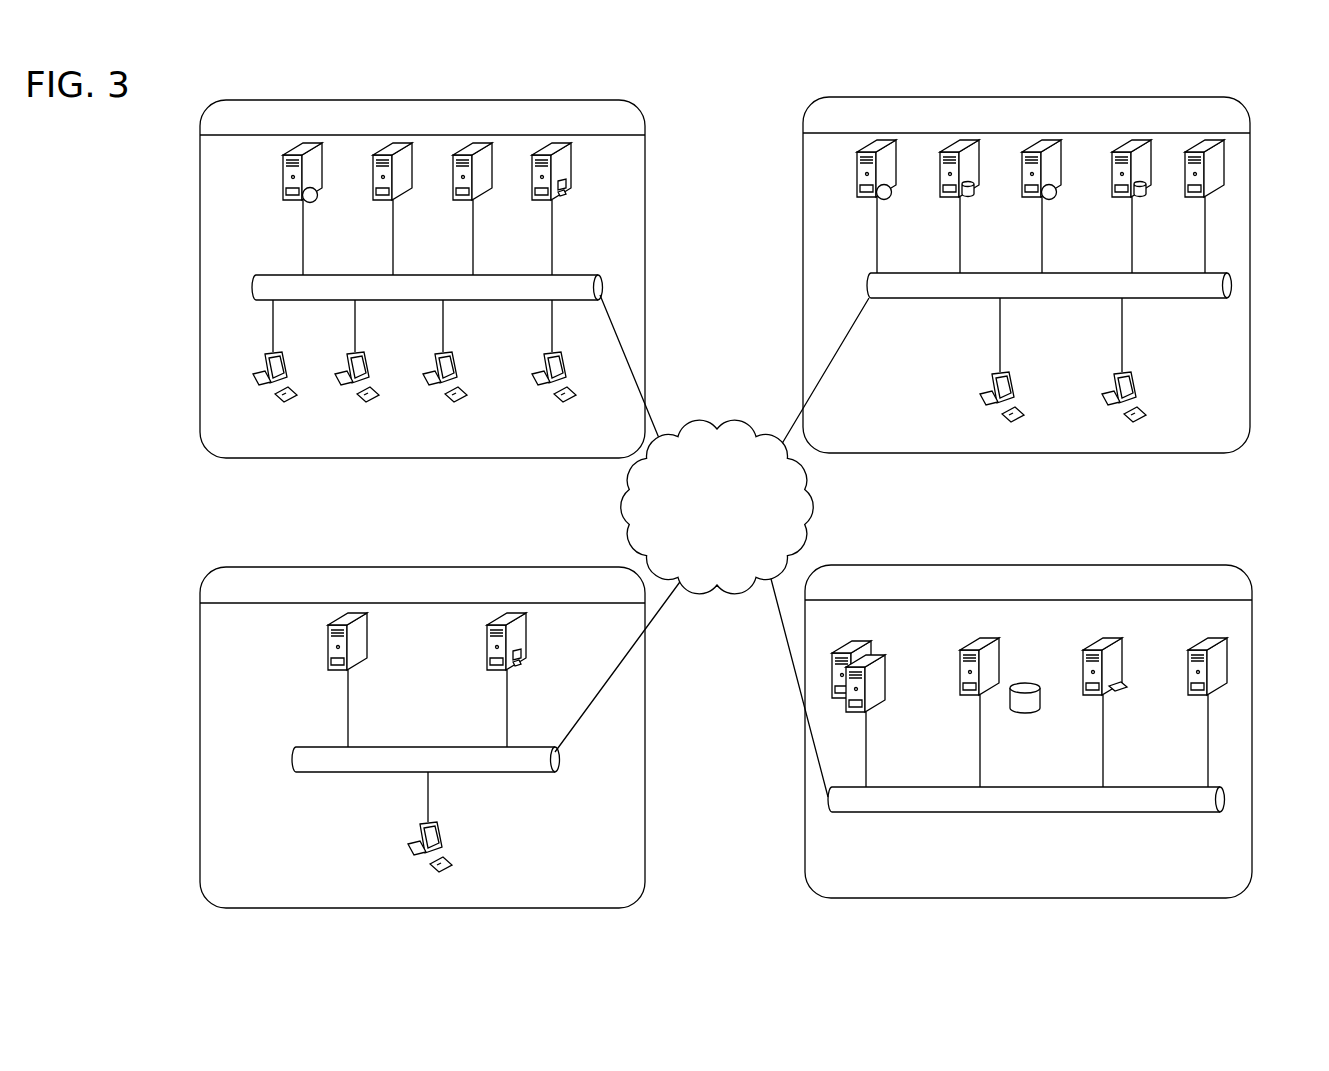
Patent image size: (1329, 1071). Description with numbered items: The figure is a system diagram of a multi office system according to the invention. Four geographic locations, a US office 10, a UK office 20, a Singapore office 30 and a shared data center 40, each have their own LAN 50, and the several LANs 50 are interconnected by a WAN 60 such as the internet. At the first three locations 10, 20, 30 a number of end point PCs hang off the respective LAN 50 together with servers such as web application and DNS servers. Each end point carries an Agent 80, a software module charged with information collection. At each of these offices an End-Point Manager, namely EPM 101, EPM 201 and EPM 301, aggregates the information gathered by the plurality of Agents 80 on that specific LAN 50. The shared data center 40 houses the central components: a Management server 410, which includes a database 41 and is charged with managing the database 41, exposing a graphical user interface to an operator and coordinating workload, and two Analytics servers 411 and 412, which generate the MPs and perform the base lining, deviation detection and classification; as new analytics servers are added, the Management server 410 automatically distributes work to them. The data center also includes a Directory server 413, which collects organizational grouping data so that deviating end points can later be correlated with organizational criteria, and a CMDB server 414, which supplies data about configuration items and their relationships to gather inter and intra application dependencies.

The location 10 is at (200, 280).
The location 20 is at (803, 250).
The location 30 is at (200, 738).
The location 40 is at (805, 857).
The LAN 50 is at (287, 273).
The WAN 60 is at (633, 495).
The Agent 80 is at (302, 391).
The End-Point Manager 101 is at (570, 157).
The End-Point Manager 201 is at (1207, 150).
The End-Point Manager 301 is at (527, 627).
The database 41 is at (1018, 683).
The Management server 410 is at (985, 649).
The Analytics server 411 is at (853, 638).
The Analytics server 412 is at (877, 657).
The Directory server 413 is at (1107, 651).
The Configuration Management Database (CMDB) server 414 is at (1205, 651).